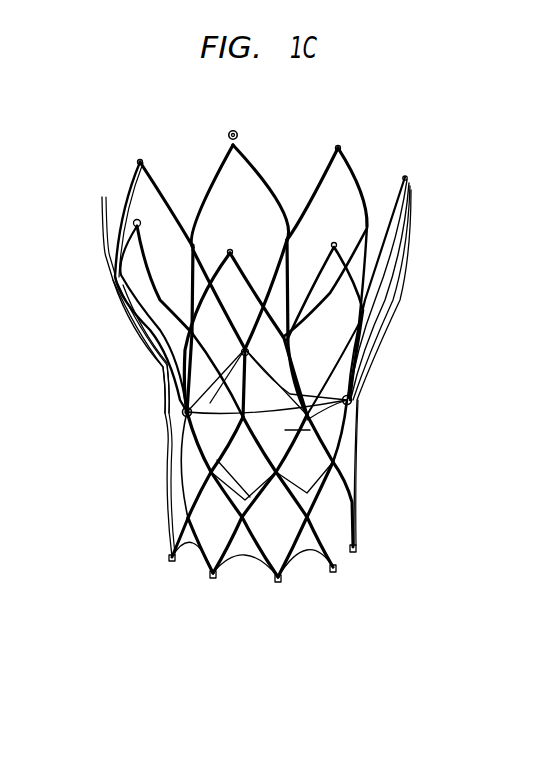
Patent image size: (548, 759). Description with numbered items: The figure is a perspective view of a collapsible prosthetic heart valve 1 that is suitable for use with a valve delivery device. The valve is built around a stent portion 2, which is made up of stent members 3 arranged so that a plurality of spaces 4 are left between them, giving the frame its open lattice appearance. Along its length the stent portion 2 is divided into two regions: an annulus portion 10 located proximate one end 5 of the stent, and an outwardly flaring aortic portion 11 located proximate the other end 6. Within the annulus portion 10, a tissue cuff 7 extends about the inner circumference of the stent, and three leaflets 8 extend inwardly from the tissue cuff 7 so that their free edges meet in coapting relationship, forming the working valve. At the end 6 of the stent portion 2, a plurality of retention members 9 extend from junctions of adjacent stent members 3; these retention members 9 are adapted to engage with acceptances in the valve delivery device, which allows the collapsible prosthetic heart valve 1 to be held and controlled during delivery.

The collapsible prosthetic heart valve 1 is at (138, 114).
The stent portion 2 is at (356, 138).
The stent members 3 is at (350, 178).
The spaces 4 is at (340, 194).
The end 5 is at (360, 578).
The end 6 is at (305, 122).
The tissue cuff 7 is at (337, 510).
The leaflets 8 is at (349, 400).
The retention members 9 is at (229, 128).
The annulus portion 10 is at (146, 442).
The aortic portion 11 is at (110, 185).